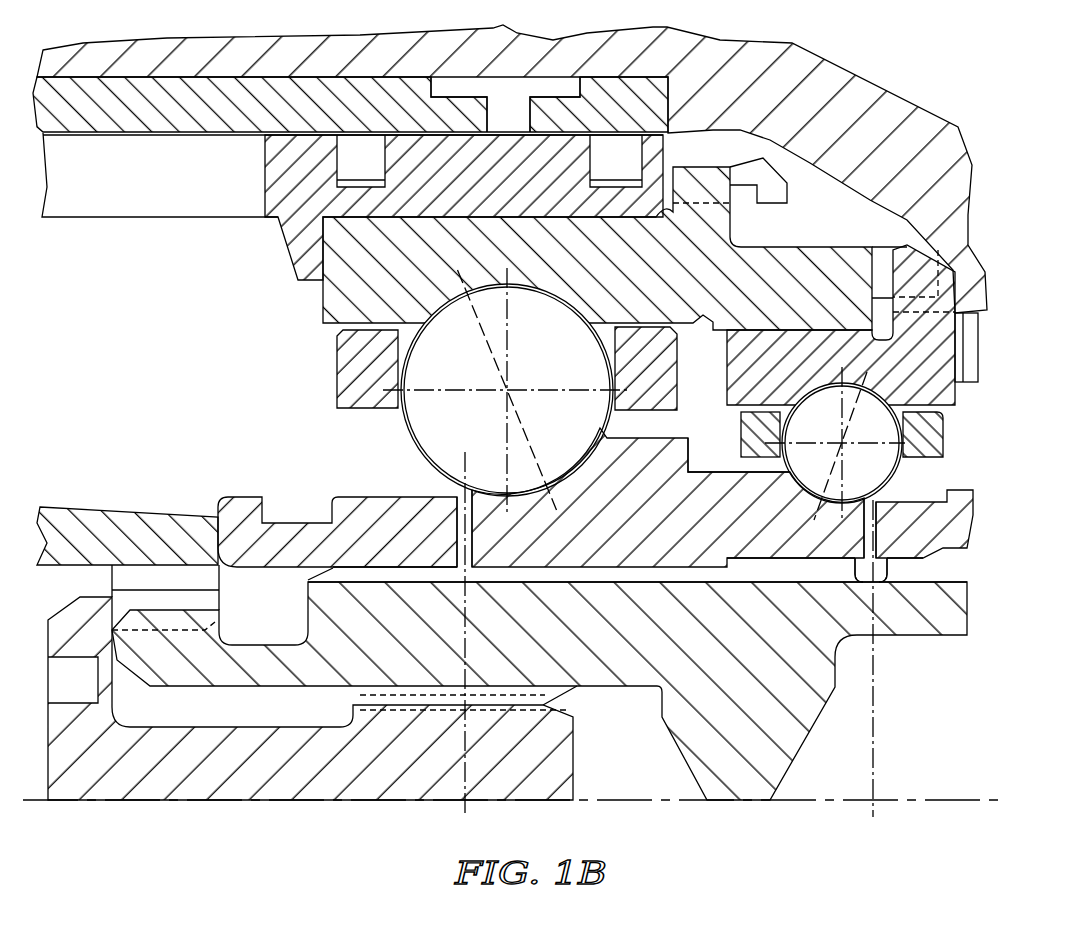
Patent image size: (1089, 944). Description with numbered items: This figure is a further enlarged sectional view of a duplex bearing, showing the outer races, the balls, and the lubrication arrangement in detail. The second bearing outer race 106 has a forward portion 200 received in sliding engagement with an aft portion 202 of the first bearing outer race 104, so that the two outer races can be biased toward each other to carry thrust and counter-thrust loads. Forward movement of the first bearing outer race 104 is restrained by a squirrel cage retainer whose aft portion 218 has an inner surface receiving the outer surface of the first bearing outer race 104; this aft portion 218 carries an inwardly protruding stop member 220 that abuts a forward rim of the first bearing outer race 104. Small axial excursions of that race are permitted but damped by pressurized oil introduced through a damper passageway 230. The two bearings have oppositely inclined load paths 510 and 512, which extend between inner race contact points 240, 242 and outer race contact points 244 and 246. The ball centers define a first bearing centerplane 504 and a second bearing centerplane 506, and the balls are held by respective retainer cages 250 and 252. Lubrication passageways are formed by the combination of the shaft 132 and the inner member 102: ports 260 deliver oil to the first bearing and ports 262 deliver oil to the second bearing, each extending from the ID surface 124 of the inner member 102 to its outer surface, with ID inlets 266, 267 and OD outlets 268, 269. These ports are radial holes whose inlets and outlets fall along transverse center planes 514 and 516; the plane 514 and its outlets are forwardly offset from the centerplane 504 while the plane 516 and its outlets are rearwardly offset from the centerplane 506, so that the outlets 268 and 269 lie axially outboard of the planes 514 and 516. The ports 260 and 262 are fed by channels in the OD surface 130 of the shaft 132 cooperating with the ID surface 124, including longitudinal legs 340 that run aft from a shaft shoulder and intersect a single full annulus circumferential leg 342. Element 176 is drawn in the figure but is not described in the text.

The inner member 102 is at (690, 553).
The first bearing outer race 104 is at (498, 240).
The second bearing outer race 106 is at (905, 345).
The ID surface 124 is at (640, 567).
The OD surface 130 is at (520, 548).
The shaft 132 is at (772, 673).
The gap 176 is at (712, 450).
The forward portion 200 is at (797, 342).
The aft portion 202 is at (792, 266).
The aft portion 218 is at (557, 158).
The stop member 220 is at (310, 240).
The damper passageway 230 is at (510, 113).
The inner race contact point 240 is at (537, 500).
The inner race contact point 242 is at (762, 585).
The outer race contact point 244 is at (472, 285).
The outer race contact point 246 is at (868, 378).
The retainer cage 250 is at (350, 342).
The retainer cage 252 is at (933, 423).
The ports 260 is at (472, 535).
The ports 262 is at (877, 530).
The ID inlet 266 is at (463, 573).
The ID inlet 267 is at (967, 585).
The OD outlet 268 is at (457, 488).
The OD outlet 269 is at (880, 502).
The longitudinal legs 340 is at (773, 582).
The circumferential leg 342 is at (880, 582).
The first bearing centerplane 504 is at (540, 290).
The second bearing centerplane 506 is at (845, 460).
The load path 510 is at (450, 298).
The load path 512 is at (907, 407).
The plane 514 is at (463, 740).
The plane 516 is at (873, 740).